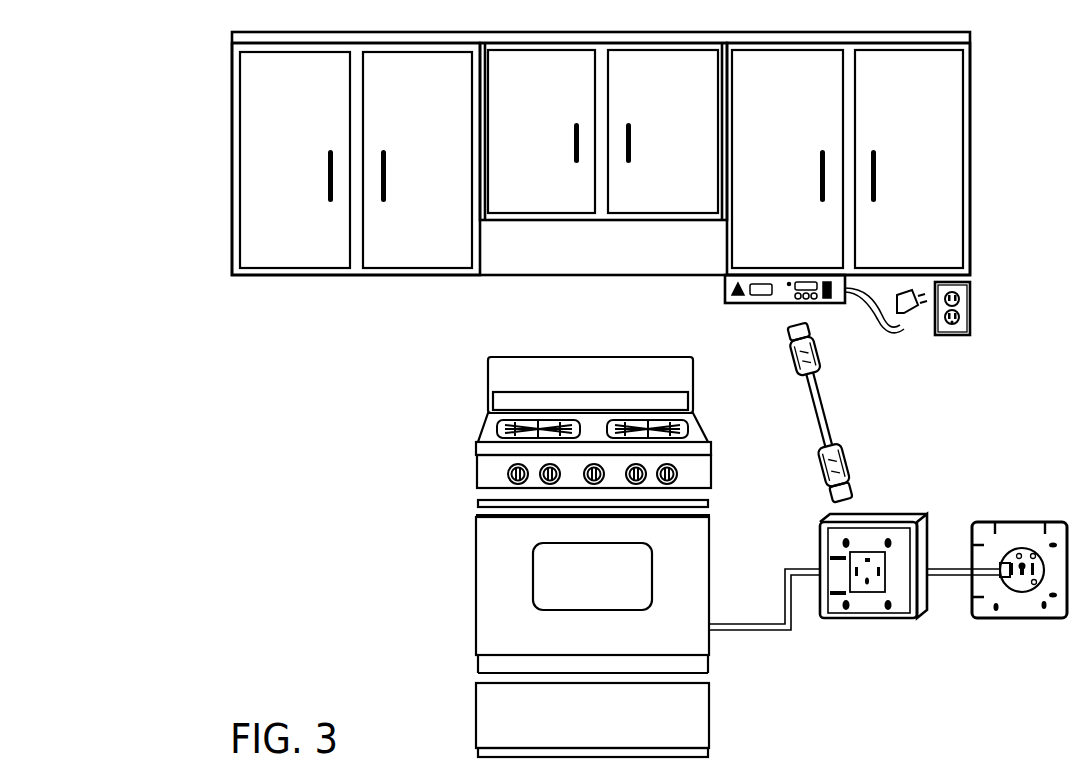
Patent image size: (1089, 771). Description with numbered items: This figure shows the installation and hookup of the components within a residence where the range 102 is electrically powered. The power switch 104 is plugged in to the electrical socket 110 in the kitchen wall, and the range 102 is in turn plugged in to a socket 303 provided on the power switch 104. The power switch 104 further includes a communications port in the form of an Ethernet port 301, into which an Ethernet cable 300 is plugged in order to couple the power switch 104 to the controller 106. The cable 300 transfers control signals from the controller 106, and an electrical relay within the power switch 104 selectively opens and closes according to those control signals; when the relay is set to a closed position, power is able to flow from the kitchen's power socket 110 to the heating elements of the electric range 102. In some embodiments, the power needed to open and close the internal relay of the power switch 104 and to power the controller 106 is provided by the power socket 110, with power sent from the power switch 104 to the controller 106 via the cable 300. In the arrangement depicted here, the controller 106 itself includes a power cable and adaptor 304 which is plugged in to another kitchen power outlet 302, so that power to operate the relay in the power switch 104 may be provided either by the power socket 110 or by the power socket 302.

The range 102 is at (472, 491).
The power switch 104 is at (887, 583).
The controller 106 is at (725, 288).
The electrical socket 110 is at (1018, 594).
The Ethernet cable 300 is at (832, 446).
The Ethernet port 301 is at (840, 522).
The kitchen power outlet 302 is at (973, 315).
The socket 303 is at (866, 594).
The power cable and adaptor 304 is at (902, 333).